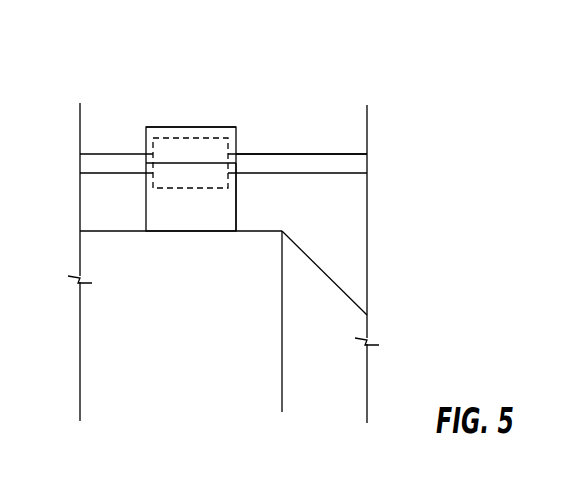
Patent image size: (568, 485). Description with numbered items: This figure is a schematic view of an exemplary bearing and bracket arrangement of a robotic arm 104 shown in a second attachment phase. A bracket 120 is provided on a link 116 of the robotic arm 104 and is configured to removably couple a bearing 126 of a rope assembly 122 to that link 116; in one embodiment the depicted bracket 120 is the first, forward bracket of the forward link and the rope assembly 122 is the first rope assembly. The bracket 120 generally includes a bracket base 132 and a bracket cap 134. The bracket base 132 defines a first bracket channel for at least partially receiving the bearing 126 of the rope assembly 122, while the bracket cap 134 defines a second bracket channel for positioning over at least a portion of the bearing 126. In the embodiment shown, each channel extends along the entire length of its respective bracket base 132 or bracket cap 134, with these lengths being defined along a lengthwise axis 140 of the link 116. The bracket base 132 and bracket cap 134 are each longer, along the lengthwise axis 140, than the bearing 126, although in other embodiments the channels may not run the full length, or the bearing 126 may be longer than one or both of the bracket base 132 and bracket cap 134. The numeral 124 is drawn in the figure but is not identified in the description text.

The robotic arm 104 is at (277, 62).
The link 116 is at (103, 253).
The bracket 120 is at (130, 118).
The rope assembly 122 is at (297, 133).
The upper surface 124 is at (334, 153).
The bearing 126 is at (182, 189).
The bracket base 132 is at (236, 203).
The bracket cap 134 is at (192, 127).
The lengthwise axis 140 is at (325, 457).